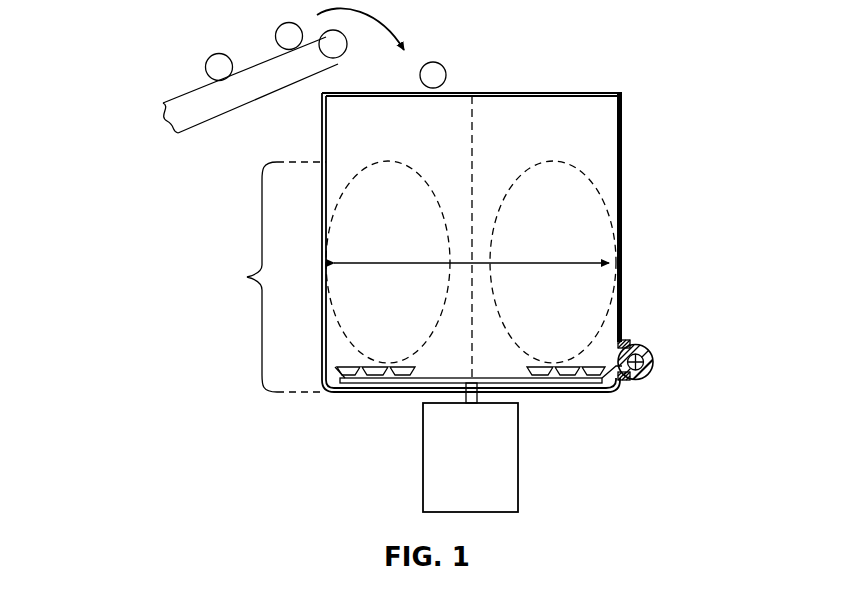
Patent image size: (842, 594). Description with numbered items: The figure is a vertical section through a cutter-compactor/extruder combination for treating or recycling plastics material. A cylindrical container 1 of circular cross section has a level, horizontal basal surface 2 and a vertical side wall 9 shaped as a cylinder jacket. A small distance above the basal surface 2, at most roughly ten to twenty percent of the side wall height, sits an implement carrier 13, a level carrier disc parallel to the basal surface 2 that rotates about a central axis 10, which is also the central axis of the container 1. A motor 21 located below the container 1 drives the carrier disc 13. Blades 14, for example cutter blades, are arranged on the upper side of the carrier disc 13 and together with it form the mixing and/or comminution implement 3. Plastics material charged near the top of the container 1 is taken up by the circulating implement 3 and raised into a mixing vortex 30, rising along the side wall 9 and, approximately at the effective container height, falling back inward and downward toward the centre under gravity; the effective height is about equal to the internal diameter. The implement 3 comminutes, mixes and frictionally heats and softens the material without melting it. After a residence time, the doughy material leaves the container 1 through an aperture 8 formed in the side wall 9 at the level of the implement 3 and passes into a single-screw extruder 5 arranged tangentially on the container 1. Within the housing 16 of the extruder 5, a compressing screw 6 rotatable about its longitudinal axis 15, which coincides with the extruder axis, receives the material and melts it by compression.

The container 1 is at (645, 70).
The basal surface 2 is at (400, 393).
The mixing and/or comminution implement 3 is at (423, 366).
The extruder 5 is at (634, 338).
The screw 6 is at (626, 381).
The aperture 8 is at (613, 352).
The side wall 9 is at (623, 188).
The central axis of rotation 10 is at (474, 130).
The implement carrier 13 is at (550, 384).
The blades 14 is at (345, 376).
The longitudinal axis 15 is at (645, 356).
The housing 16 is at (638, 380).
The motor 21 is at (428, 458).
The mixing vortex 30 is at (388, 160).